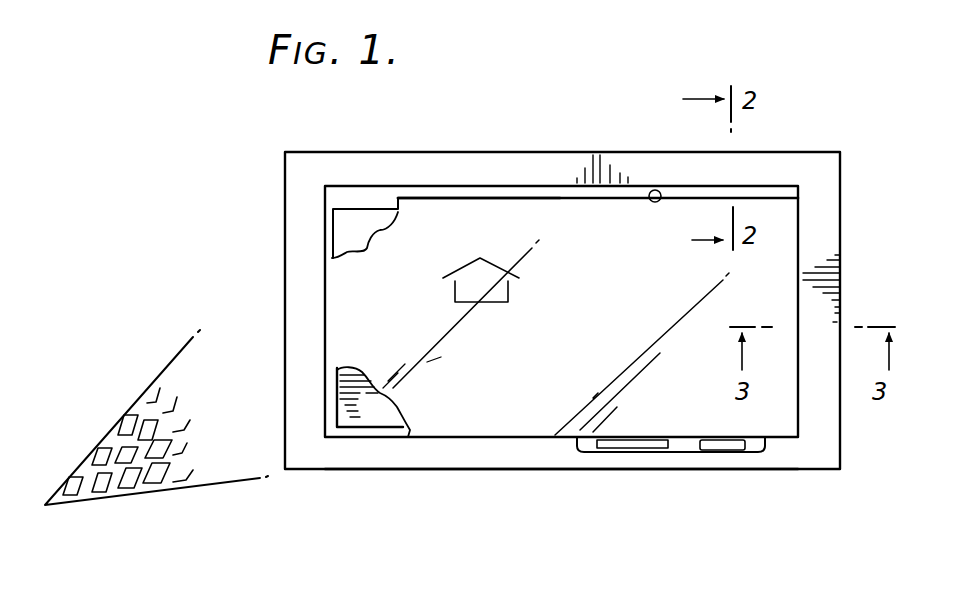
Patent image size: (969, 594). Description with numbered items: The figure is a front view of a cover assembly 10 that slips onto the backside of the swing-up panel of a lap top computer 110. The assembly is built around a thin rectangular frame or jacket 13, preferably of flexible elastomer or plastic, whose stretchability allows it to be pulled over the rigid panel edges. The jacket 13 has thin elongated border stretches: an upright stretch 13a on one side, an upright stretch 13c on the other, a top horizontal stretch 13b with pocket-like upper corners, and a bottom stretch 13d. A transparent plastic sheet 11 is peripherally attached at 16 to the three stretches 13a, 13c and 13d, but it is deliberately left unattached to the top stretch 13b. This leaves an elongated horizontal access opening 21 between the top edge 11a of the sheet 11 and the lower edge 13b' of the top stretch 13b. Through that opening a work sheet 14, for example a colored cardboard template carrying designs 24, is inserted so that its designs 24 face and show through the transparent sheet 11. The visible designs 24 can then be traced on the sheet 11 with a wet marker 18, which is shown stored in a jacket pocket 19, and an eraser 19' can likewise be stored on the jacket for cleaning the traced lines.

The cover assembly 10 is at (266, 135).
The transparent plastic sheet 11 is at (565, 316).
The top edge of sheet 11a is at (558, 197).
The frame or jacket 13 is at (798, 147).
The border stretch 13a is at (295, 258).
The top horizontal border stretch 13b is at (560, 120).
The lower edge of frame stretch 13b' is at (641, 138).
The border stretch 13c is at (835, 214).
The jacket border stretch 13d is at (440, 464).
The work sheet 14 is at (340, 222).
The peripheral attachment 16 is at (798, 402).
The wet marker 18 is at (620, 448).
The jacket pocket 19 is at (702, 495).
The eraser 19' is at (744, 485).
The horizontal access opening 21 is at (458, 193).
The designs 24 is at (455, 292).
The lap top computer 110 is at (128, 391).